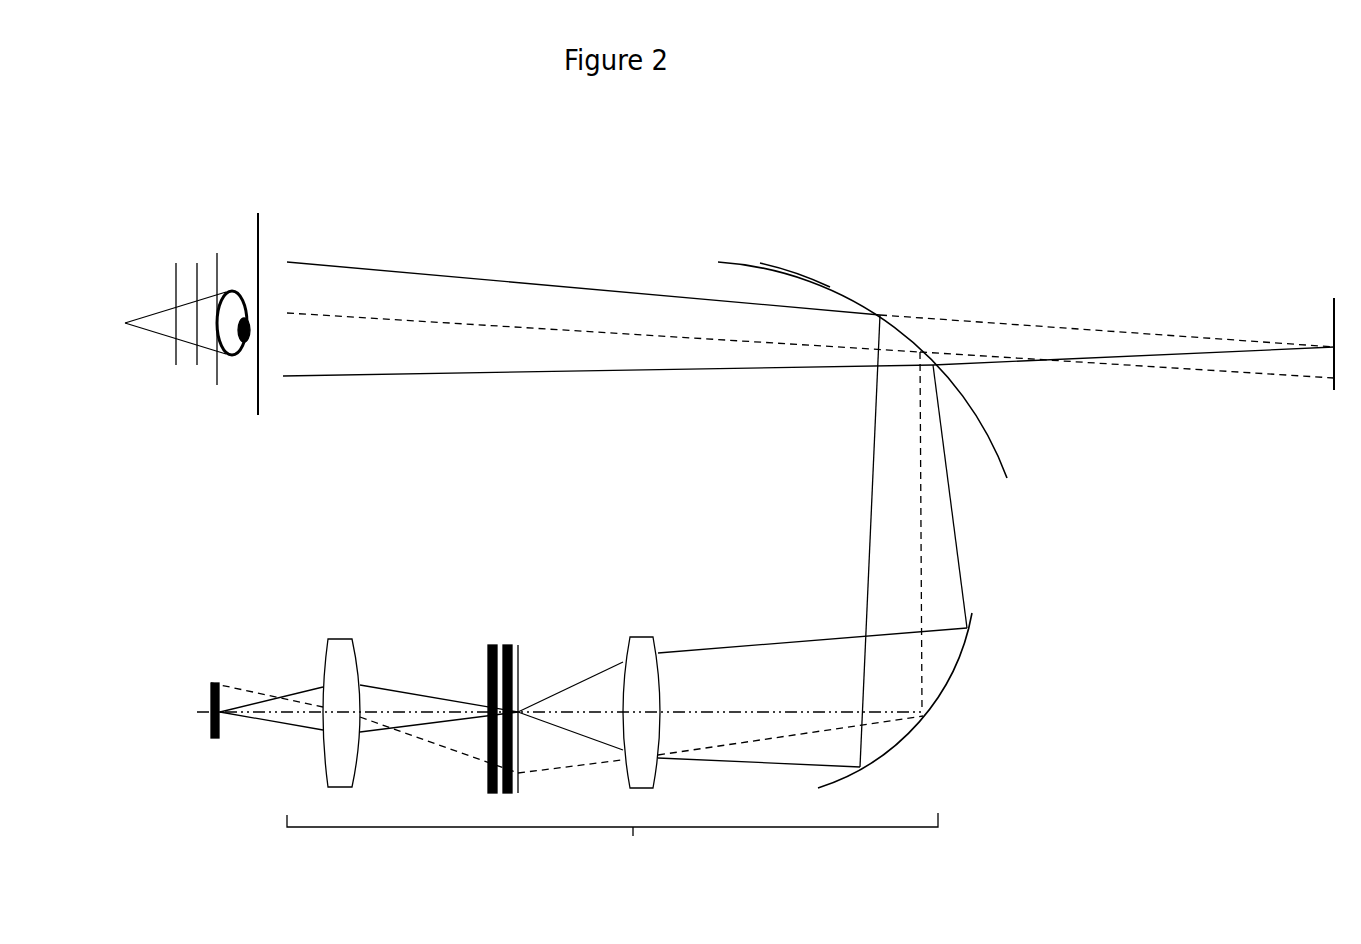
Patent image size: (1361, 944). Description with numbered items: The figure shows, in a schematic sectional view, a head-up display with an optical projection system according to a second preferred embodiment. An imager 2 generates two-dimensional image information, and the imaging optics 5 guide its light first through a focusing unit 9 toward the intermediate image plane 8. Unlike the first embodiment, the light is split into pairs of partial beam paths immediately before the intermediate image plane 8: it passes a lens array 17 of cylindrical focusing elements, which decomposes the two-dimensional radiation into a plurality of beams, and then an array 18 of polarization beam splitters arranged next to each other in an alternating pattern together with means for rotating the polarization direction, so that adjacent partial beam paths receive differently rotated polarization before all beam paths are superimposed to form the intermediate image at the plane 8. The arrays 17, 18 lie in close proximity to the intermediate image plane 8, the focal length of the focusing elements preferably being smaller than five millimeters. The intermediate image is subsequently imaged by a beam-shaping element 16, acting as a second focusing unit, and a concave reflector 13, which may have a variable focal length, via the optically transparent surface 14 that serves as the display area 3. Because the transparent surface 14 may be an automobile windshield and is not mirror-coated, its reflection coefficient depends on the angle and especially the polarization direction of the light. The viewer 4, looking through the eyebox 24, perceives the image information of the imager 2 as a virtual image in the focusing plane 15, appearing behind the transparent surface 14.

The imager 2 is at (217, 742).
The display area 3 is at (767, 262).
The viewer 4 is at (195, 375).
The imaging optics 5 is at (612, 840).
The intermediate image plane 8 is at (479, 700).
The focusing unit 9 is at (345, 760).
The concave reflector 13 is at (952, 678).
The transparent surface 14 is at (787, 260).
The focusing plane 15 is at (1323, 288).
The beam-shaping element 16 is at (622, 733).
The lens array 17 is at (492, 642).
The array of polarization beam splitters 18 is at (507, 642).
The eyebox 24 is at (257, 200).